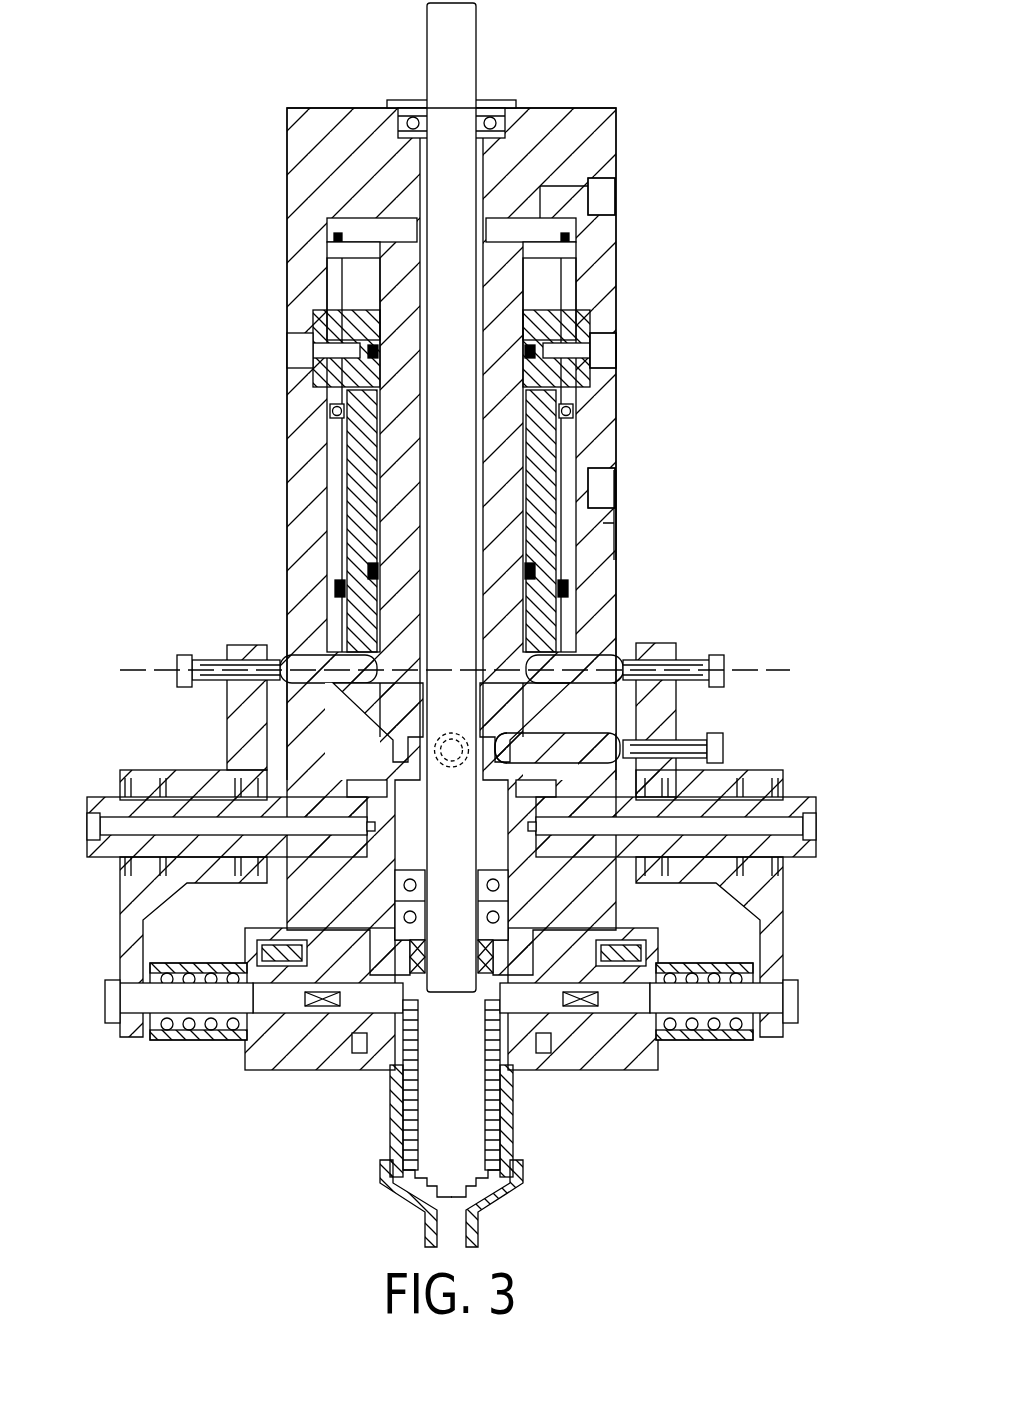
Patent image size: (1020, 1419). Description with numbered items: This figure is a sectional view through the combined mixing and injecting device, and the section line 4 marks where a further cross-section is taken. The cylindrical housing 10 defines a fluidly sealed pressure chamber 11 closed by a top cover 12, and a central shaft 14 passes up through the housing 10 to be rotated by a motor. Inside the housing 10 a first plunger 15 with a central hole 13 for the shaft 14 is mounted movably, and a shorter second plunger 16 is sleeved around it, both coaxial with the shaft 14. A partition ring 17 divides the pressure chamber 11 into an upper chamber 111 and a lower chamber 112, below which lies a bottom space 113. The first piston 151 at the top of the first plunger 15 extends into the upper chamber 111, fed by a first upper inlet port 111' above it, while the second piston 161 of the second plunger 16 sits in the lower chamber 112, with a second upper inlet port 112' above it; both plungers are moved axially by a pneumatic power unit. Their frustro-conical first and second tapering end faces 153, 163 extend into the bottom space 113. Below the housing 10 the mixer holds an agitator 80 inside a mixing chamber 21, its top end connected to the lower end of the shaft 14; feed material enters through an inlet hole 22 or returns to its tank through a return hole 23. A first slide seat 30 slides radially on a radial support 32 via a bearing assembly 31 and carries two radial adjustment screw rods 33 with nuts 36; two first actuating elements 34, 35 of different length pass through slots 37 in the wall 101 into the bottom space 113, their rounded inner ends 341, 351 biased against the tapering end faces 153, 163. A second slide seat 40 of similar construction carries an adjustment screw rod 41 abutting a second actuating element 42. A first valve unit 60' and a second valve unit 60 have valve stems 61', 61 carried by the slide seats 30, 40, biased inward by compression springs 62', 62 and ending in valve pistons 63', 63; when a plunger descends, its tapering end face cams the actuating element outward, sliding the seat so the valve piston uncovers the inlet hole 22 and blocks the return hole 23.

The housing 10 is at (451, 444).
The pressure chamber 11 is at (602, 343).
The top cover 12 is at (353, 541).
The central hole 13 is at (413, 123).
The central shaft 14 is at (451, 497).
The first plunger 15 is at (353, 455).
The second plunger 16 is at (362, 521).
The partition ring 17 is at (346, 348).
The mixing chamber 21 is at (451, 1088).
The inlet hole 22 is at (282, 953).
The return hole 23 is at (336, 1022).
The first slide seat 30 is at (709, 947).
The bearing assembly 31 is at (709, 785).
The radial support 32 is at (231, 827).
The radial adjustment screw rods 33 is at (673, 709).
The first actuating element 34 is at (574, 669).
The first actuating element 35 is at (557, 748).
The nuts 36 is at (656, 720).
The slots 37 is at (378, 662).
The second slide seat 40 is at (193, 947).
The adjustment screw rod 41 is at (228, 671).
The second actuating element 42 is at (302, 707).
The second valve unit 60 is at (198, 1001).
The first valve unit 60' is at (704, 1001).
The valve stem 61 is at (179, 1001).
The valve stem 61' is at (724, 1001).
The compression spring 62 is at (200, 1001).
The compression spring 62' is at (703, 1001).
The valve piston 63 is at (320, 999).
The valve piston 63' is at (583, 999).
The agitator 80 is at (451, 1203).
The wall 101 is at (609, 515).
The upper chamber 111 is at (549, 455).
The first upper inlet port 111' is at (577, 198).
The lower chamber 112 is at (541, 521).
The second upper inlet port 112' is at (323, 350).
The bottom space 113 is at (193, 785).
The first piston 151 is at (372, 231).
The first tapering end face 153 is at (367, 740).
The second piston 161 is at (337, 411).
The second tapering end face 163 is at (340, 588).
The rounded inner end 341 is at (525, 662).
The rounded inner end 351 is at (501, 748).
The section line 4- 4 is at (147, 615).